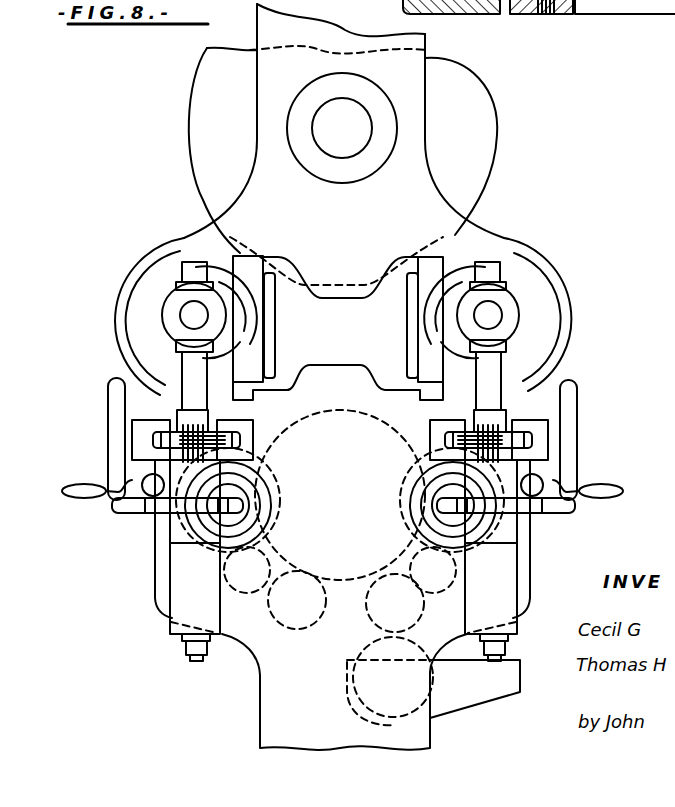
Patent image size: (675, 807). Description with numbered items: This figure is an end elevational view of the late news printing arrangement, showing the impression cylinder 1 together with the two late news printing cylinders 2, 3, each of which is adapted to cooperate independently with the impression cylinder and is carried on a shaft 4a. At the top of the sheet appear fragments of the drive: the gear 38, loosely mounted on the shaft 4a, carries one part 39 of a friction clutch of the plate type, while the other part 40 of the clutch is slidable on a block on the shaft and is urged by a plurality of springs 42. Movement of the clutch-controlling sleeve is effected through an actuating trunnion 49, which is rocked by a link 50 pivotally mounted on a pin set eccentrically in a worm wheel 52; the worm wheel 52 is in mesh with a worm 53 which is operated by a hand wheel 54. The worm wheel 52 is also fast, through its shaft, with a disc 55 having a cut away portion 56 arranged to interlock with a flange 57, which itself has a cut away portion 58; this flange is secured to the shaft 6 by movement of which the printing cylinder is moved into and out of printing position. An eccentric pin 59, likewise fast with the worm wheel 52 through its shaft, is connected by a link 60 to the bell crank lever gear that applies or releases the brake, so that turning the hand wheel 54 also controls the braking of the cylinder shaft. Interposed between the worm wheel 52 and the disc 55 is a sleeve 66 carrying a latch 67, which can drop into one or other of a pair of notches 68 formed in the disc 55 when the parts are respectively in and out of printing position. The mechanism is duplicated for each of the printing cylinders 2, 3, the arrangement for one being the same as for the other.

The impression cylinder 1 is at (494, 123).
The late news printing cylinder 2 is at (138, 255).
The late news printing cylinder 3 is at (538, 250).
The shaft 4a is at (189, 313).
The actuating trunnion 49 is at (430, 316).
The link 50 is at (182, 378).
The worm wheel 52 is at (152, 440).
The worm 53 is at (137, 487).
The hand wheel 54 is at (107, 395).
The disc 55 is at (163, 516).
The cut away portion 56 is at (342, 547).
The flange 57 is at (268, 477).
The cut away portion 58 is at (340, 567).
The eccentric pin 59 is at (194, 661).
The link 60 is at (182, 648).
The shaft 6 is at (248, 520).
The sleeve 66 is at (224, 470).
The latch 67 is at (116, 484).
The notches 68 is at (142, 505).
The gear 38 is at (650, 4).
The friction clutch part 39 is at (565, 17).
The friction clutch part 40 is at (521, 17).
The springs 42 is at (456, 14).